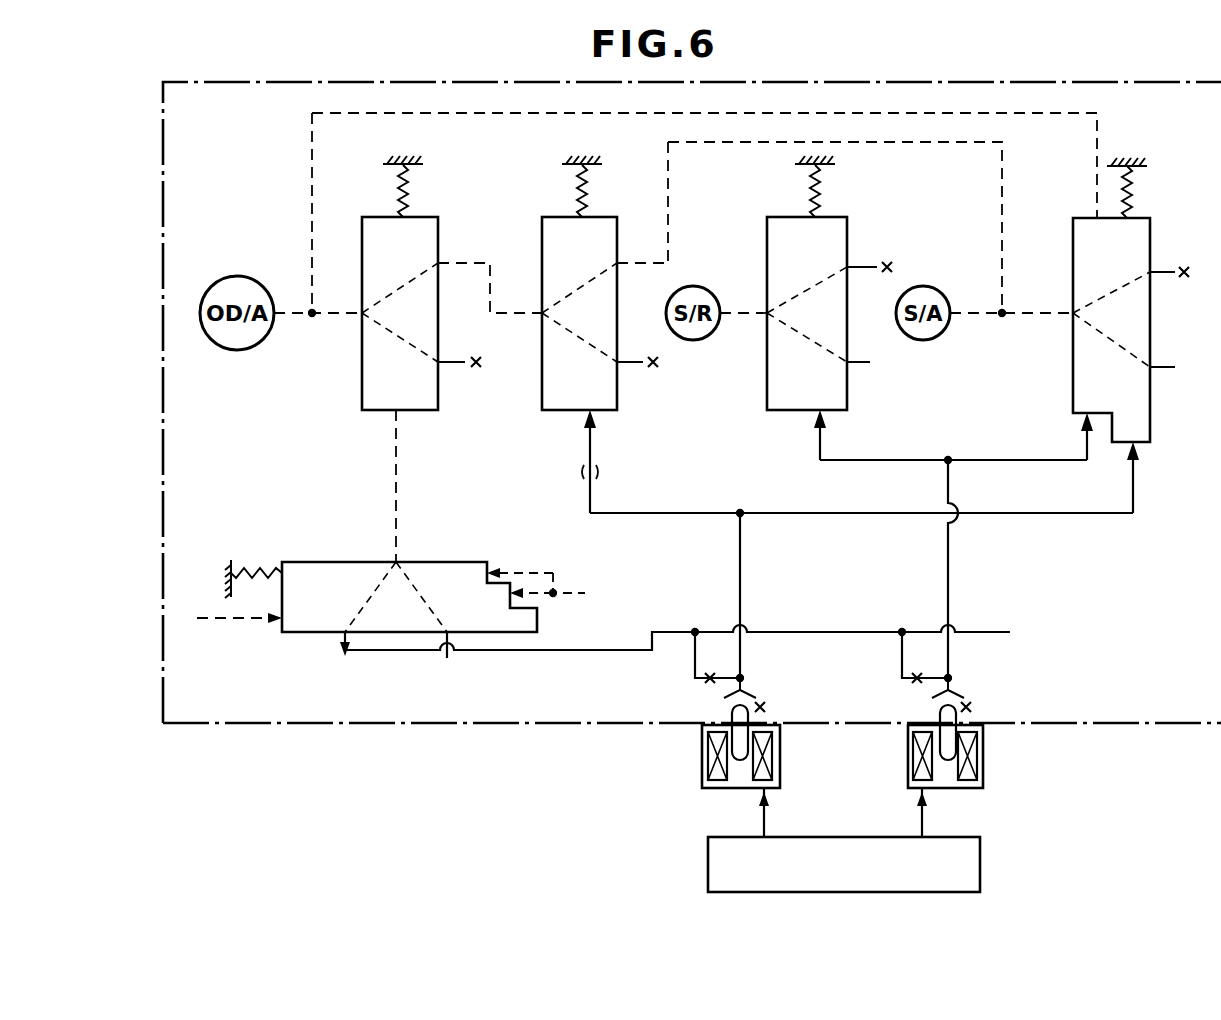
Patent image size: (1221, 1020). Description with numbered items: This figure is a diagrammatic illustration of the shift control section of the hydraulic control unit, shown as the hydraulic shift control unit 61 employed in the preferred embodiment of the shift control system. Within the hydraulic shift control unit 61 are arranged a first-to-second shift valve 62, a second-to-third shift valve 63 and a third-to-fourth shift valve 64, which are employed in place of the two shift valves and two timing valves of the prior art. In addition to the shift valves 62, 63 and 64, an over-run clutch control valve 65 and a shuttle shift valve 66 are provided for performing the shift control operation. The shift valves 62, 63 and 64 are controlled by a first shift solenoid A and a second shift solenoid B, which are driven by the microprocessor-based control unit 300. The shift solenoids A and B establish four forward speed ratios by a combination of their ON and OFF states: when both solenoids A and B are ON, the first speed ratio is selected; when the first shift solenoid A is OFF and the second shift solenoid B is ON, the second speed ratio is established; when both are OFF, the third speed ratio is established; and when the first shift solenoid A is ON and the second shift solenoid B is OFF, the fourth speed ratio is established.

The hydraulic shift control unit 61 is at (163, 176).
The 1-2 shift valve 62 is at (1150, 222).
The 2-3 shift valve 63 is at (847, 227).
The 3-4 shift valve 64 is at (612, 217).
The over-run clutch control valve 65 is at (438, 220).
The shuttle shift valve 66 is at (455, 562).
The first shift solenoid A is at (702, 754).
The second shift solenoid B is at (983, 757).
The control unit 300 is at (982, 842).